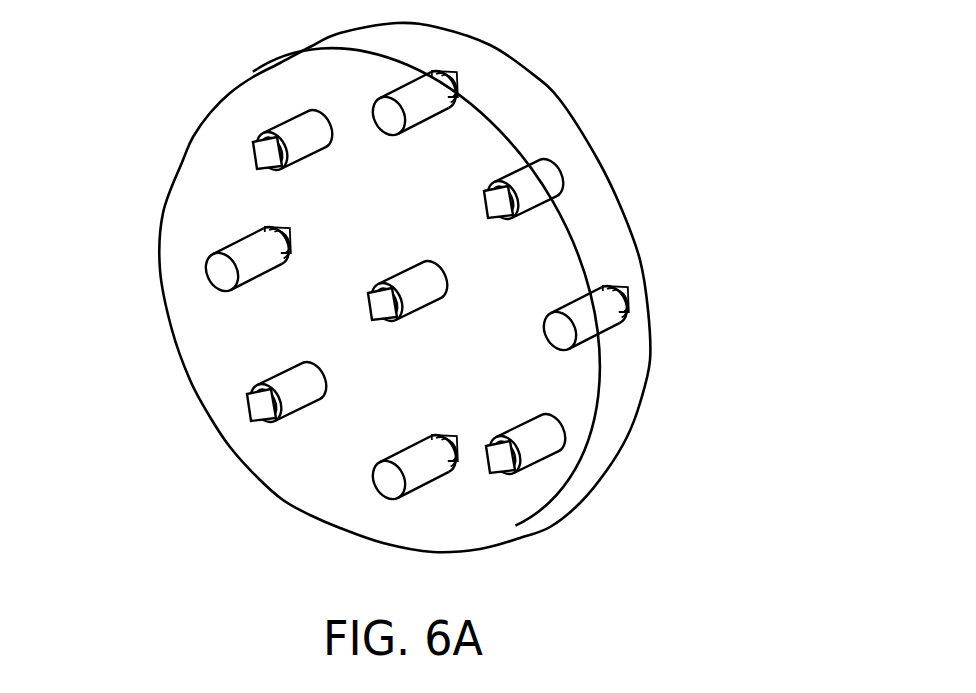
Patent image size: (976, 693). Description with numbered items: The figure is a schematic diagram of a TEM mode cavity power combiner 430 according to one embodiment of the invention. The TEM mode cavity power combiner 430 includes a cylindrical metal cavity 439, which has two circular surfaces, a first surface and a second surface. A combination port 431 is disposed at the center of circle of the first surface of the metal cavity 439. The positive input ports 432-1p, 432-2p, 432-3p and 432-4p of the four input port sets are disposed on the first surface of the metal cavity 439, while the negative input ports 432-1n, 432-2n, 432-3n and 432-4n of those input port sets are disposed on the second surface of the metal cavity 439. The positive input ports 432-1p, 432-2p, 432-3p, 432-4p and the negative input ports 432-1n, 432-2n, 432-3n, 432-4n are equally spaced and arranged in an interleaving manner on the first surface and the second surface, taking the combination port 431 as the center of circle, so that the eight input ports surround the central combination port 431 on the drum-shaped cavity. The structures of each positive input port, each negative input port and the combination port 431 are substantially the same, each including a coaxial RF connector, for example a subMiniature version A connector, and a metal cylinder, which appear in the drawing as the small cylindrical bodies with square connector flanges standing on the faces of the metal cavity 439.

The TEM mode cavity power combiner 430 is at (405, 313).
The combination port 431 is at (440, 283).
The metal cavity 439 is at (480, 147).
The negative input port 432-1n is at (222, 275).
The positive input port 432-1p is at (258, 410).
The negative input port 432-2n is at (407, 80).
The positive input port 432-2p is at (290, 127).
The negative input port 432-3n is at (585, 327).
The positive input port 432-3p is at (540, 202).
The negative input port 432-4n is at (420, 477).
The positive input port 432-4p is at (543, 437).